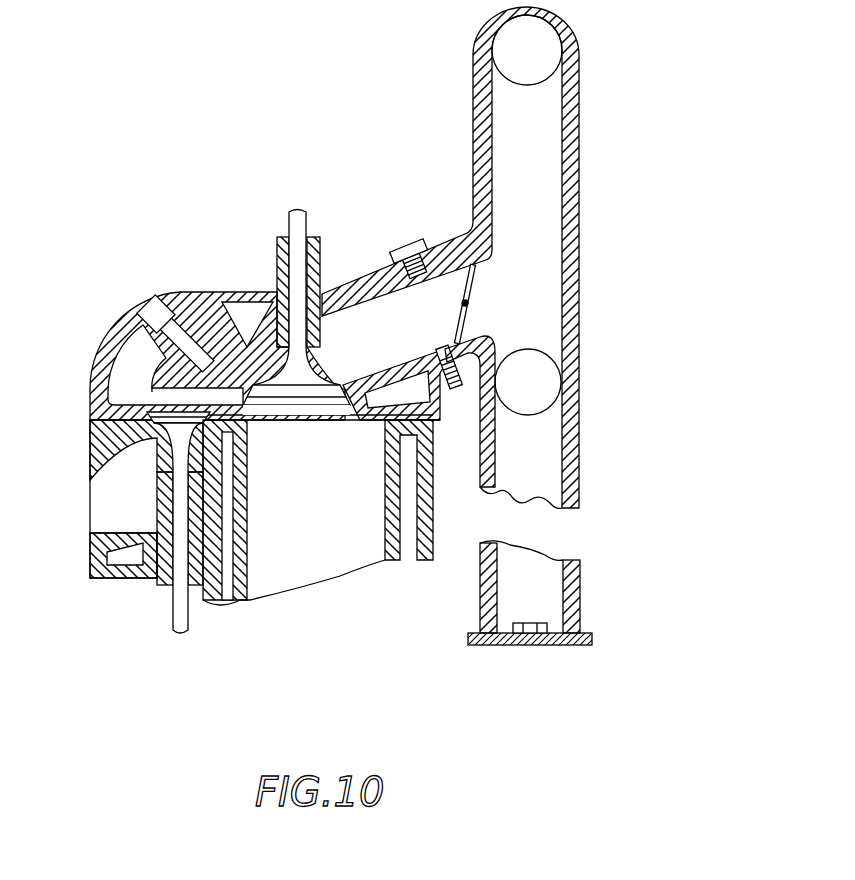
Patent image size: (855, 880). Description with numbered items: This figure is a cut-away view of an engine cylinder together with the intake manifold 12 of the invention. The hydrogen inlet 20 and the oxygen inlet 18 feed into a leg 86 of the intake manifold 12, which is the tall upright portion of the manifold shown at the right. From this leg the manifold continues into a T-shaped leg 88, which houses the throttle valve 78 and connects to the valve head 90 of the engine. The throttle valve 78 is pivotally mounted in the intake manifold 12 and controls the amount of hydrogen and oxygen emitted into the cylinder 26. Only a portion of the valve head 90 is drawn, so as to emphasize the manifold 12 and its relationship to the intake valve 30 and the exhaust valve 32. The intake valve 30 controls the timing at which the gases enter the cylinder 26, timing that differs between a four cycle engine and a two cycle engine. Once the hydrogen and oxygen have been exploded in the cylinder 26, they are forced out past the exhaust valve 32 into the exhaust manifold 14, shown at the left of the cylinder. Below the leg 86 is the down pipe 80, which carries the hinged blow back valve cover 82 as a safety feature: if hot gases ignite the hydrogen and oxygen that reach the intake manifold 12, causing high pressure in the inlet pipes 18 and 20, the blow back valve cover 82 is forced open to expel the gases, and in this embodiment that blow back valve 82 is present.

The intake manifold 12 is at (607, 255).
The exhaust manifold 14 is at (88, 480).
The oxygen inlet manifold 18 is at (550, 383).
The hydrogen inlet manifold 20 is at (540, 42).
The cylinder 26 is at (330, 507).
The intake valve 30 is at (288, 224).
The exhaust valve 32 is at (170, 610).
The throttle valve 78 is at (476, 280).
The down pipe 80 is at (580, 443).
The blow back valve cover 82 is at (560, 645).
The leg 86 is at (578, 183).
The T-shaped leg 88 is at (350, 288).
The valve head 90 is at (223, 290).